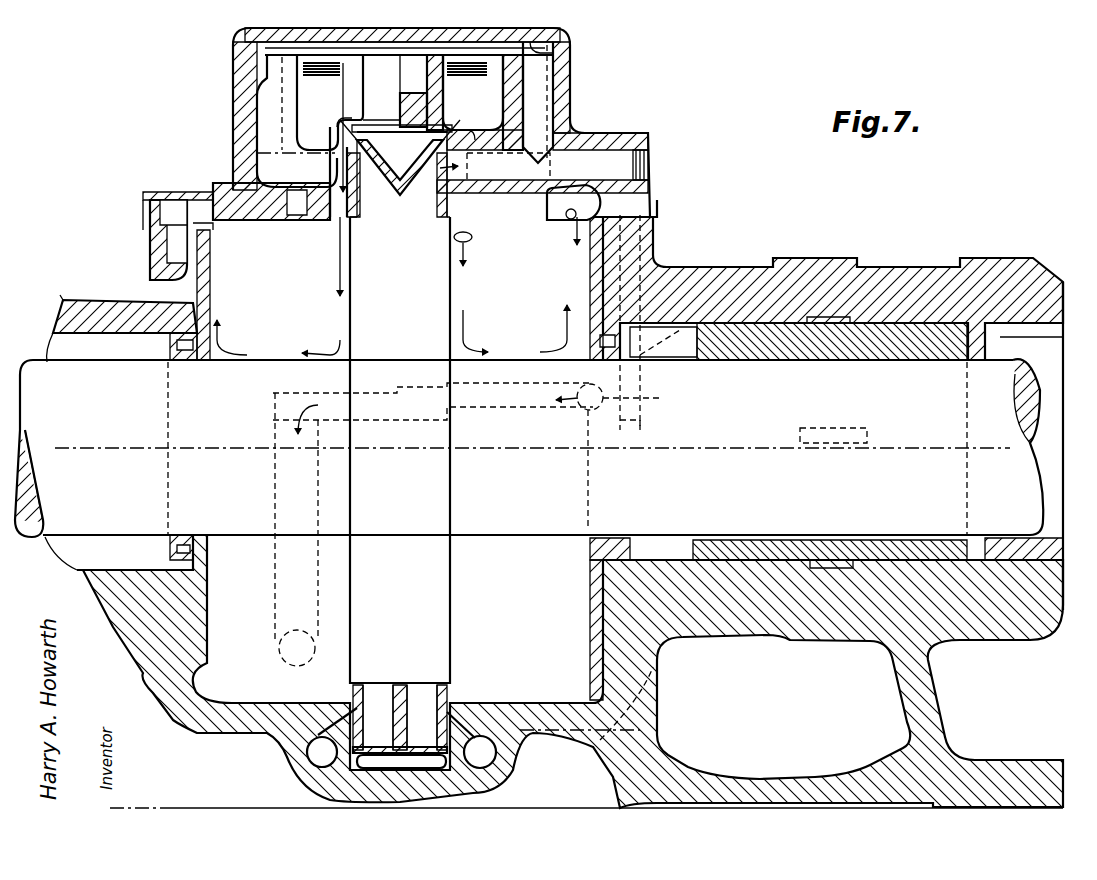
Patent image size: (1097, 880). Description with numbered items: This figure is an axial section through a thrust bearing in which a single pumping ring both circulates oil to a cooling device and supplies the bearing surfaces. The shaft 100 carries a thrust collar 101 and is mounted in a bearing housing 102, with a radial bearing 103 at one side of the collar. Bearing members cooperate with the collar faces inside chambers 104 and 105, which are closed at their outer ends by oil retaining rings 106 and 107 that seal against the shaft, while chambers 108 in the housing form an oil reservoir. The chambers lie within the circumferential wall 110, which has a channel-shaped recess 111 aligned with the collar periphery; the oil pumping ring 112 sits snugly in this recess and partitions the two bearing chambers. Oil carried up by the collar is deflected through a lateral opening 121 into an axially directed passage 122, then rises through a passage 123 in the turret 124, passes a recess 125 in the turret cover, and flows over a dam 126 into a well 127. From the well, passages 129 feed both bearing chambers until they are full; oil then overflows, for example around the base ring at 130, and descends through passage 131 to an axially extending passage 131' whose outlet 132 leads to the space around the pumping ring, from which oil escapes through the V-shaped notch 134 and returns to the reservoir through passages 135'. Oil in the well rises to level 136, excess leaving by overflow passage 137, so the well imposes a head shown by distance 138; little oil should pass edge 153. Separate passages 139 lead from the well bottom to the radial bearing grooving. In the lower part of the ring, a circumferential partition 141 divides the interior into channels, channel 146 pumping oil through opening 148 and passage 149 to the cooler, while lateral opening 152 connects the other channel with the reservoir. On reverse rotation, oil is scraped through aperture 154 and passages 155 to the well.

The shaft 100 is at (821, 402).
The thrust collar 101 is at (440, 303).
The bearing housing 102 is at (740, 277).
The radial bearing 103 is at (770, 333).
The chamber 104 is at (556, 640).
The chamber 105 is at (232, 297).
The oil retaining ring 106 is at (613, 323).
The oil retaining ring 107 is at (167, 350).
The chamber 108 is at (835, 736).
The circumferential wall 110 is at (240, 727).
The channel-shaped recess 111 is at (357, 730).
The oil pumping ring 112 is at (400, 690).
The lateral opening 121 is at (445, 158).
The axially directed passage 122 is at (587, 157).
The passage 123 is at (543, 100).
The turret 124 is at (560, 123).
The recess 125 is at (535, 45).
The dam 126 is at (514, 53).
The well 127 is at (450, 92).
The passages 129 is at (337, 217).
The rear portion of the base ring 130 is at (570, 217).
The passage 131 is at (621, 455).
The axially extending passage 131' is at (536, 423).
The outlet 132 is at (413, 400).
The V-shaped notch 134 is at (403, 190).
The passages 135' is at (261, 600).
The oil level 136 is at (343, 63).
The overflow passage 137 is at (423, 67).
The distance 138 is at (343, 90).
The passages 139 is at (195, 215).
The circumferentially extending partition 141 is at (407, 717).
The channel 146 is at (373, 760).
The opening 148 is at (445, 730).
The passage 149 is at (490, 757).
The lateral opening 152 is at (337, 740).
The edge 153 is at (423, 67).
The aperture 154 is at (360, 173).
The passages 155 is at (262, 106).